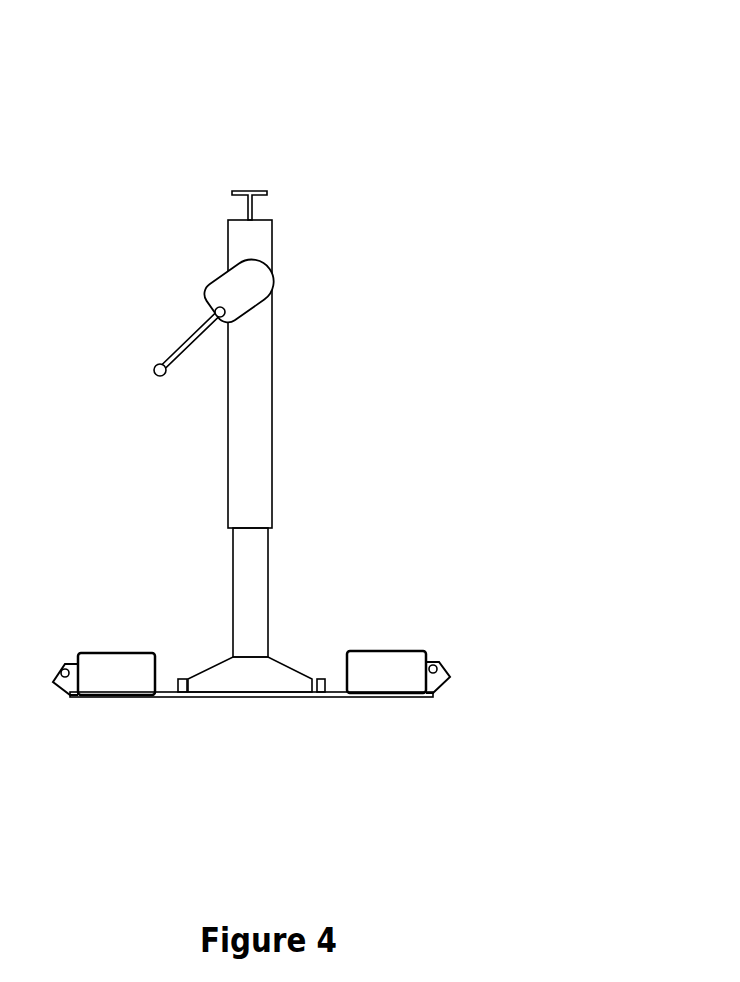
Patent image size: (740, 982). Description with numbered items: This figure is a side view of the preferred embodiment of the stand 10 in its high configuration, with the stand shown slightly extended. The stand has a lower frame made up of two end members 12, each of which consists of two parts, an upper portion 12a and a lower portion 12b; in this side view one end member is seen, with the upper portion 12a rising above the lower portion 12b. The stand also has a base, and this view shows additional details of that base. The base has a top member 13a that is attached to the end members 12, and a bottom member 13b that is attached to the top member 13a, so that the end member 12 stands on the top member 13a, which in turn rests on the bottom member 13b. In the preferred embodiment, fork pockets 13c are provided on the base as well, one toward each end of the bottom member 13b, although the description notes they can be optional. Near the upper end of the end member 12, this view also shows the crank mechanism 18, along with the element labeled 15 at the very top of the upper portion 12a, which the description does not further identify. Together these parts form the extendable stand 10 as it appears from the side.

The stand 10 is at (296, 108).
The end member 12 is at (190, 428).
The upper portion 12a is at (247, 363).
The lower portion 12b is at (258, 587).
The top member 13a is at (218, 658).
The bottom member 13b is at (308, 698).
The fork pocket 13c is at (106, 644).
The top handle 15 is at (248, 192).
The crank mechanism 18 is at (208, 270).